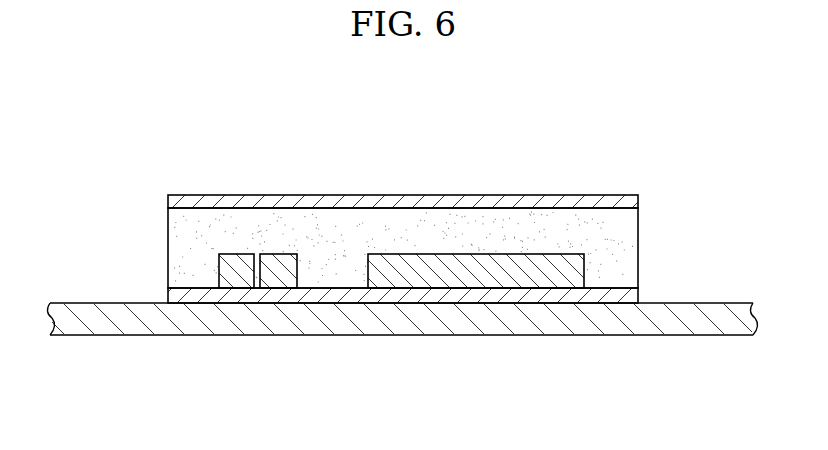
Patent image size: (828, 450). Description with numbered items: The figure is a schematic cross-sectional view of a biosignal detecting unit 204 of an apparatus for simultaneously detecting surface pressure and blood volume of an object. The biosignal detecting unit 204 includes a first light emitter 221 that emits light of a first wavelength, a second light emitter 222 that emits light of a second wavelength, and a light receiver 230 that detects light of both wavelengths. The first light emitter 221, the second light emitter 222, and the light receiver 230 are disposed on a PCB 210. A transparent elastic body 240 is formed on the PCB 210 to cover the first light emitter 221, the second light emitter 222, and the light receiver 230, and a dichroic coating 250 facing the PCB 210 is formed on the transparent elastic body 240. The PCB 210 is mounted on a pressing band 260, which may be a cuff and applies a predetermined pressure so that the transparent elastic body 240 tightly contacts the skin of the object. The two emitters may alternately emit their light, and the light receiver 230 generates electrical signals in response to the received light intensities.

The biosignal detecting unit 204 is at (636, 167).
The PCB 210 is at (567, 297).
The first light emitter 221 is at (236, 282).
The second light emitter 222 is at (278, 280).
The light receiver 230 is at (479, 280).
The transparent elastic body 240 is at (632, 250).
The dichroic coating 250 is at (630, 204).
The pressing band 260 is at (665, 325).